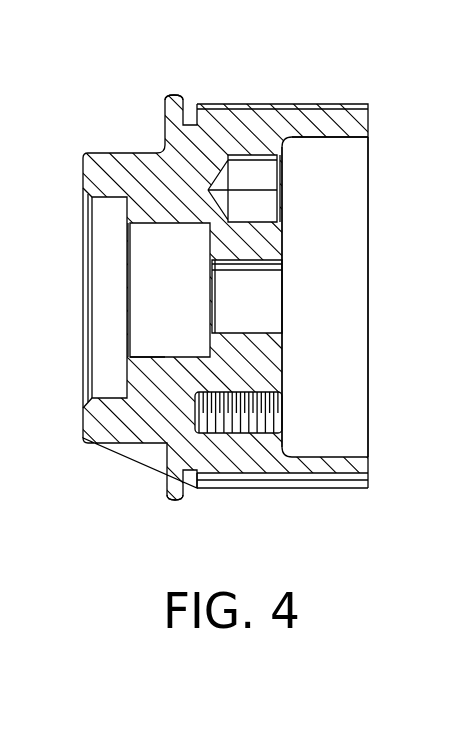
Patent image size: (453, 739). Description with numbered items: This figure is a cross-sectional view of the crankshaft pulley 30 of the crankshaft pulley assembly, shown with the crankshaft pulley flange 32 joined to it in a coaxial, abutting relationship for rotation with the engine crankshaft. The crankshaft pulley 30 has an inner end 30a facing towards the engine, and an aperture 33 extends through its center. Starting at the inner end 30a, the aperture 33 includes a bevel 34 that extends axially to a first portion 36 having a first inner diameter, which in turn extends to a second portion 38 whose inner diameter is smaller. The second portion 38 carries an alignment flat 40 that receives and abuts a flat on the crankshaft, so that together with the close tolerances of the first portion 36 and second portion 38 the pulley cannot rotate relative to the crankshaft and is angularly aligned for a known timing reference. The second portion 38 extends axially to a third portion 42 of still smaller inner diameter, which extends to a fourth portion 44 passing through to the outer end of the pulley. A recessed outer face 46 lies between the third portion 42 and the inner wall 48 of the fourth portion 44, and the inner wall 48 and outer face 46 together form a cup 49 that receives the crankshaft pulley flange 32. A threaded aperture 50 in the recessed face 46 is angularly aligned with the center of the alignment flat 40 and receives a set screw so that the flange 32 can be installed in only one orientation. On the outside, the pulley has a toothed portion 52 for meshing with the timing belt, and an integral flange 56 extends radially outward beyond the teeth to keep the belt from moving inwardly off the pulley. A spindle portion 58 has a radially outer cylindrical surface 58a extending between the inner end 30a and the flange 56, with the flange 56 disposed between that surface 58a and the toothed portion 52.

The crankshaft pulley 30 is at (226, 279).
The inner end 30a is at (83, 170).
The crankshaft pulley flange 32 is at (300, 489).
The aperture 33 is at (72, 298).
The bevel 34 is at (88, 318).
The first portion 36 is at (108, 285).
The second portion 38 is at (150, 243).
The alignment flat 40 is at (145, 355).
The third portion 42 is at (247, 296).
The fourth portion 44 is at (356, 297).
The recessed outer face 46 is at (284, 345).
The inner wall 48 is at (330, 187).
The cup 49 is at (357, 178).
The threaded aperture 50 is at (277, 418).
The toothed portion 52 is at (318, 103).
The flange 56 is at (172, 95).
The spindle portion 58 is at (226, 276).
The radially outer cylindrical surface 58a is at (125, 443).